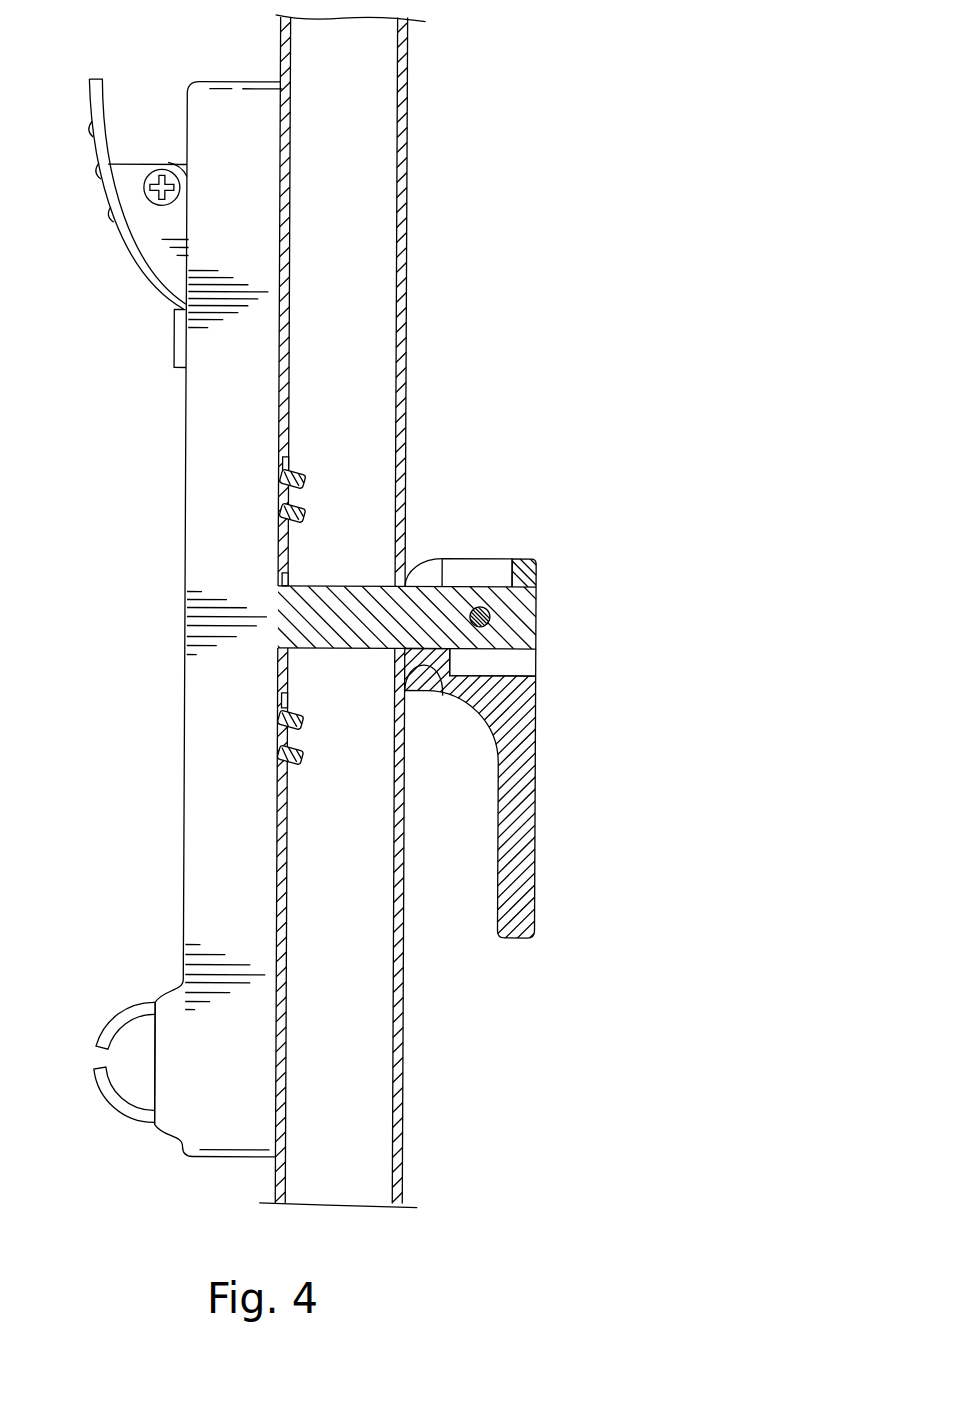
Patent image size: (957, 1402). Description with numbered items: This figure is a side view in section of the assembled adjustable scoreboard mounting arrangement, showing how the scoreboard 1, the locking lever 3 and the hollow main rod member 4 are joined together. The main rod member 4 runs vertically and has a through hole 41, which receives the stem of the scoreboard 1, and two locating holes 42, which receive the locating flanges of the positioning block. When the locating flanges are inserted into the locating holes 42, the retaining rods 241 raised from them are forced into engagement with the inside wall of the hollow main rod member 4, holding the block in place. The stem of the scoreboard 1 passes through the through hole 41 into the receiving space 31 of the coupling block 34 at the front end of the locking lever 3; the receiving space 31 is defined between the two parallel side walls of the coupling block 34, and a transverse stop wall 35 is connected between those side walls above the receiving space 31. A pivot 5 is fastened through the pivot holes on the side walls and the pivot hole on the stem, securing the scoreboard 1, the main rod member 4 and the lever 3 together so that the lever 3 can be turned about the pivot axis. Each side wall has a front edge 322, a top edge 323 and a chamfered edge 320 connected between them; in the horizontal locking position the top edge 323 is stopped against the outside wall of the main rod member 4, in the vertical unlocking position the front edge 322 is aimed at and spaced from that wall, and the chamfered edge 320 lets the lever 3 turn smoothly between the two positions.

The scoreboard 1 is at (170, 590).
The locking lever 3 is at (548, 750).
The hollow main rod member 4 is at (422, 149).
The pivot 5 is at (490, 620).
The receiving space 31 is at (445, 568).
The coupling block 34 is at (523, 573).
The transverse stop wall 35 is at (450, 690).
The through hole 41 is at (285, 573).
The locating holes 42 is at (285, 467).
The retaining rods 241 is at (302, 475).
The chamfered edge 320 is at (428, 568).
The front edge 322 is at (465, 558).
The top edge 323 is at (403, 663).